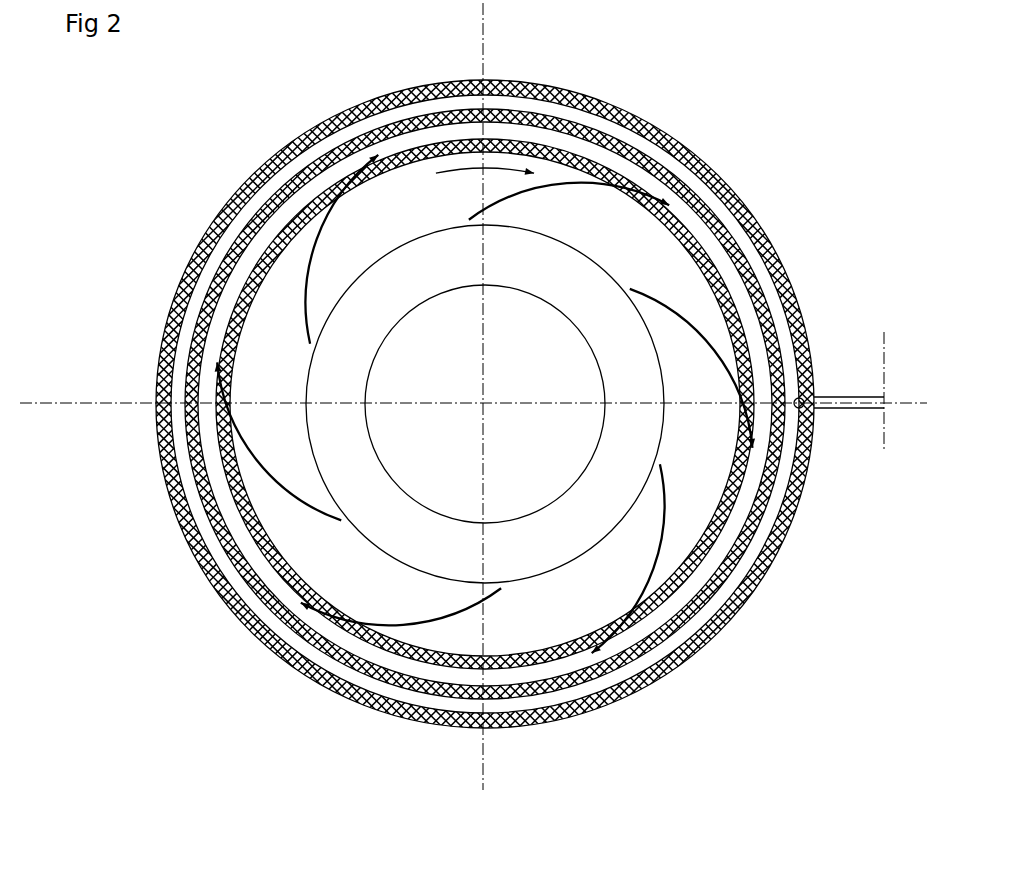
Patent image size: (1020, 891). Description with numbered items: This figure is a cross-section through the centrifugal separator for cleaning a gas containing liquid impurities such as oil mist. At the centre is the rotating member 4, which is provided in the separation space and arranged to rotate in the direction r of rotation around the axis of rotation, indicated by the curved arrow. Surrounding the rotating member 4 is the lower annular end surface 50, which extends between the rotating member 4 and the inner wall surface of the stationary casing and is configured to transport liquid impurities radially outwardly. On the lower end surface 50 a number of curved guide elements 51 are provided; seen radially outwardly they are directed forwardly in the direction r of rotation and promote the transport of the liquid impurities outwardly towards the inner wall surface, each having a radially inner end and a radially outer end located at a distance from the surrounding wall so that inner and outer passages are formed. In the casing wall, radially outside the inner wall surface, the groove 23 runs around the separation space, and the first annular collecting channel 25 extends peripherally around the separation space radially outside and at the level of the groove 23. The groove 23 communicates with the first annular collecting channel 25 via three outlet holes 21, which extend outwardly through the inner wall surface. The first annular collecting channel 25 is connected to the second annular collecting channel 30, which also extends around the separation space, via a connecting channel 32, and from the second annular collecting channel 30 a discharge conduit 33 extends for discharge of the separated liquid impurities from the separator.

The rotating member 4 is at (302, 362).
The outlet hole 21 is at (540, 113).
The groove 23 is at (263, 240).
The first annular collecting channel 25 is at (371, 123).
The second annular collecting channel 30 is at (225, 530).
The connecting channel 32 is at (803, 396).
The discharge conduit 33 is at (855, 410).
The lower annular end surface 50 is at (514, 640).
The guide element 51 is at (318, 210).
The direction of rotation r is at (462, 164).